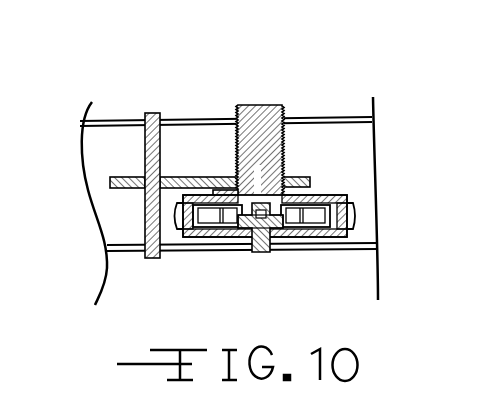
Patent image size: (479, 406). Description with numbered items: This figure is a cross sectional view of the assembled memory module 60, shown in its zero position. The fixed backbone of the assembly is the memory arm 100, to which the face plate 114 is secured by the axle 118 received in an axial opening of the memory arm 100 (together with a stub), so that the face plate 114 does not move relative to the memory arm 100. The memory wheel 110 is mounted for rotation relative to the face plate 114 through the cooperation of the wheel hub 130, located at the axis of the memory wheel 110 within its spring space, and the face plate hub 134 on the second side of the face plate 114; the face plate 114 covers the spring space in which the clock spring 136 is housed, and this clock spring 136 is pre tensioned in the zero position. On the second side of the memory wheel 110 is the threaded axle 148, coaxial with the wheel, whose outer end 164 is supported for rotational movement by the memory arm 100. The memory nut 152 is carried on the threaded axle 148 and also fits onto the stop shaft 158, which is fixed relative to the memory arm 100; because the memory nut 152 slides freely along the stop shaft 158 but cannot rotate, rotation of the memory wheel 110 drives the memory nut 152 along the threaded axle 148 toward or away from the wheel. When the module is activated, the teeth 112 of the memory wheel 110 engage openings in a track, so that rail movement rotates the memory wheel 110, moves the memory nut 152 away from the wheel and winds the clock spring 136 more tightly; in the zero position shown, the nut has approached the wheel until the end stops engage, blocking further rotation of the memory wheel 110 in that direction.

The memory module 60 is at (143, 74).
The memory arm 100 is at (332, 116).
The memory wheel 110 is at (325, 195).
The teeth 112 is at (356, 212).
The face plate 114 is at (320, 233).
The axle 118 is at (262, 236).
The wheel hub 130 is at (257, 203).
The face plate hub 134 is at (268, 228).
The clock spring 136 is at (214, 226).
The threaded axle 148 is at (236, 137).
The memory nut 152 is at (188, 177).
The stop shaft 158 is at (145, 146).
The outer end 164 is at (249, 104).